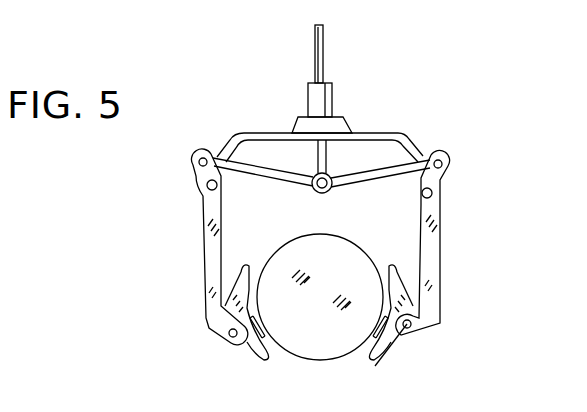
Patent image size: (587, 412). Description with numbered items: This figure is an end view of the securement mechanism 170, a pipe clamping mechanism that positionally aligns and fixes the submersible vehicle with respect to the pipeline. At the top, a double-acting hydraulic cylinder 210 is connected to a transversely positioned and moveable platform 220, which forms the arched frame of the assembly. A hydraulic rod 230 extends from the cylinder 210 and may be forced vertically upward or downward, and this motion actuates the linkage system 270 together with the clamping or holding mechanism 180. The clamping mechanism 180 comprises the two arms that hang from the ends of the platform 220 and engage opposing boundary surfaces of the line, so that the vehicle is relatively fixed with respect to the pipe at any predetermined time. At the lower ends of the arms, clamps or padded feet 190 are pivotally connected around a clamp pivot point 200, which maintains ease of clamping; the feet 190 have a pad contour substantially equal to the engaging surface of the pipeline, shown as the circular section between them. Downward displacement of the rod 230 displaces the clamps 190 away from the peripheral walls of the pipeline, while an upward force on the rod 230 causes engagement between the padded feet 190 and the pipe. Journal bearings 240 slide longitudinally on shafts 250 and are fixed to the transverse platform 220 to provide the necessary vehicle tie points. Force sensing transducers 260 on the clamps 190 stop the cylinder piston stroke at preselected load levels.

The securement mechanism 170 is at (403, 112).
The hydraulic rod 230 is at (320, 57).
The double-acting hydraulic cylinder 210 is at (320, 98).
The transversely positioned moveable platform 220 is at (404, 149).
The linkage system 270 is at (392, 175).
The clamping or holding mechanism 180 is at (212, 262).
The shafts 250 is at (212, 186).
The journal bearings 240 is at (438, 215).
The clamp pivot point 200 is at (231, 336).
The clamps or padded feet 190 is at (250, 345).
The force sensing transducers 260 is at (265, 352).